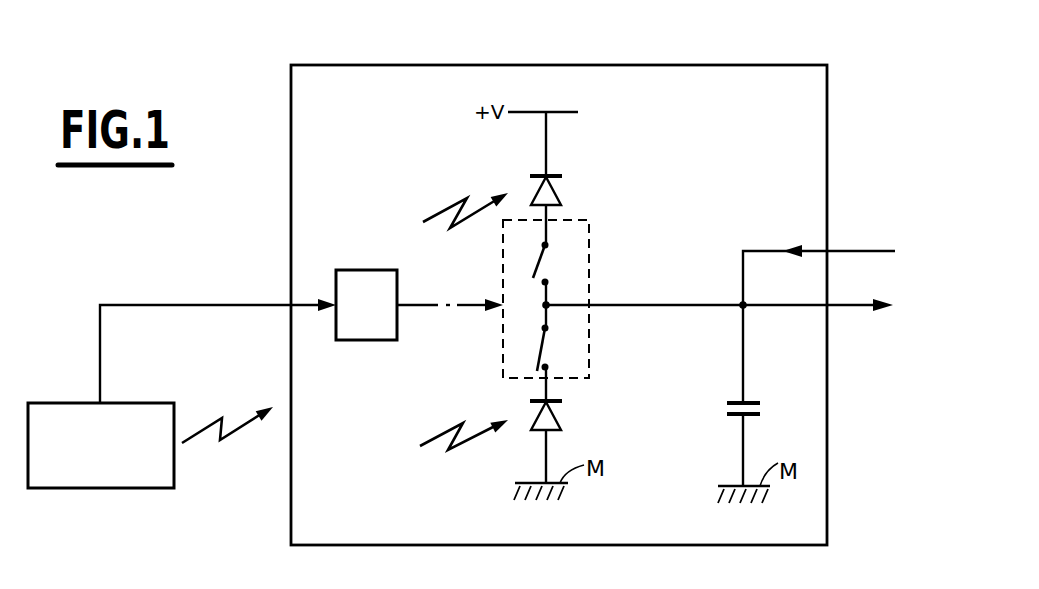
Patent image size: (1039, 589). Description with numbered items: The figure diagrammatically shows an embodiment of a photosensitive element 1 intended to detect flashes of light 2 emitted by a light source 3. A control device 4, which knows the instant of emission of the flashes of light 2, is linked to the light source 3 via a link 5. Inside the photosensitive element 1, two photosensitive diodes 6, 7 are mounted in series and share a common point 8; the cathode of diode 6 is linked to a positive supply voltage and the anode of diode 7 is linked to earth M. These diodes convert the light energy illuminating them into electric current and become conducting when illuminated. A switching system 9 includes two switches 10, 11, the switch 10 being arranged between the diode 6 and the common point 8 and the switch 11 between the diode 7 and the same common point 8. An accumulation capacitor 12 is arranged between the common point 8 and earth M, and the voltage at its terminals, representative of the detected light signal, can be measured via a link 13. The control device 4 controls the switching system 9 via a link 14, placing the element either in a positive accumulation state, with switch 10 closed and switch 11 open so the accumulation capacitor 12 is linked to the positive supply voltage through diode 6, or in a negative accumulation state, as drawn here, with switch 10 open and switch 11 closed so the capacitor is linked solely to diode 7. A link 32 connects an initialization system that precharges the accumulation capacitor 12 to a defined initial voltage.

The photosensitive element 1 is at (829, 65).
The flashes of light 2 is at (460, 200).
The light source 3 is at (83, 488).
The control device 4 is at (352, 282).
The link 5 is at (175, 303).
The photosensitive diode 6 is at (553, 198).
The photosensitive diode 7 is at (556, 418).
The common point 8 is at (549, 302).
The switching system 9 is at (589, 352).
The switch 10 is at (535, 264).
The switch 11 is at (535, 346).
The accumulation capacitor 12 is at (733, 388).
The link 13 is at (840, 308).
The link 14 is at (430, 308).
The link 32 is at (852, 250).